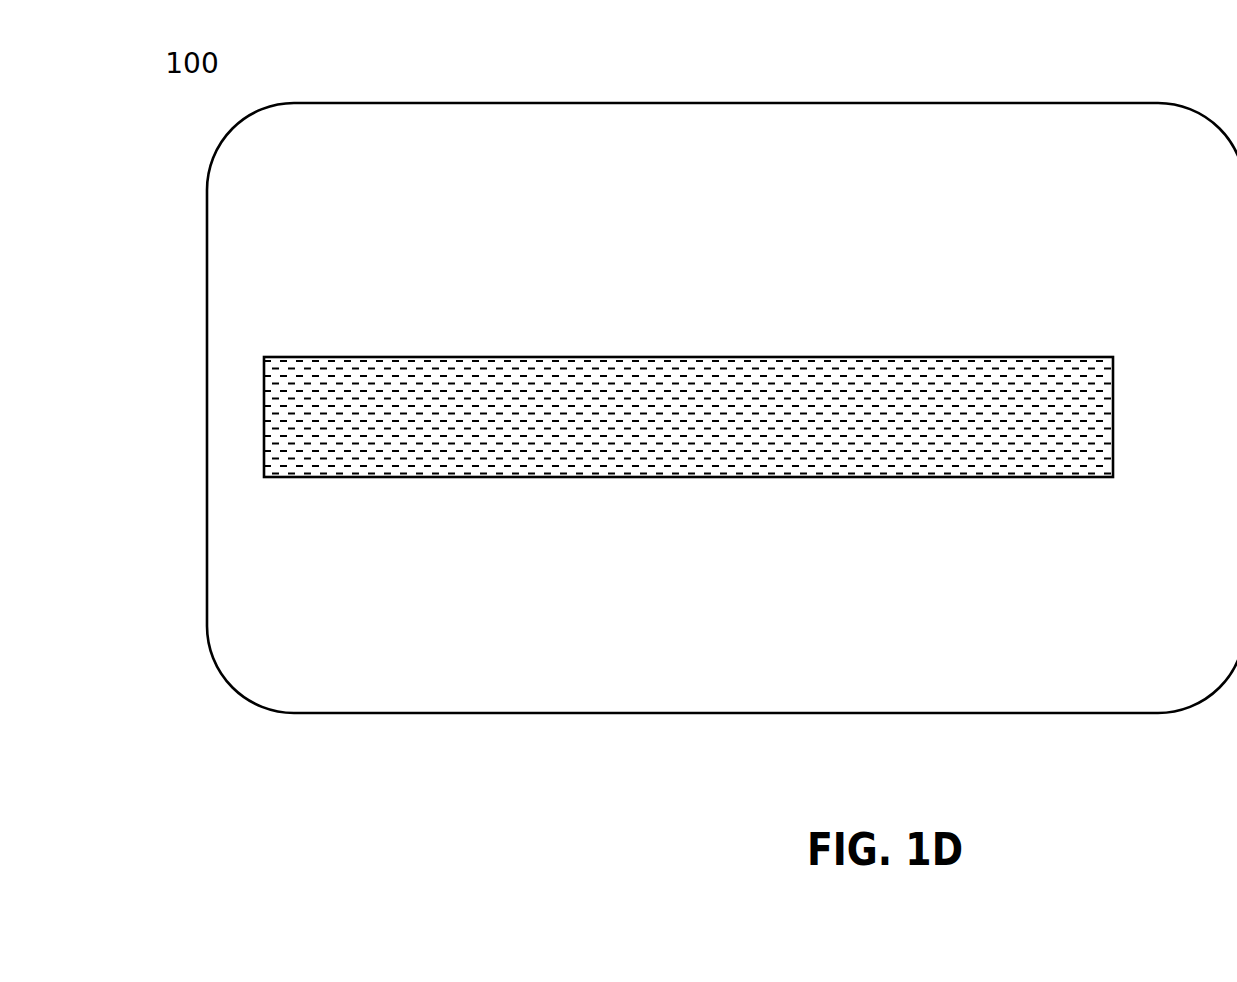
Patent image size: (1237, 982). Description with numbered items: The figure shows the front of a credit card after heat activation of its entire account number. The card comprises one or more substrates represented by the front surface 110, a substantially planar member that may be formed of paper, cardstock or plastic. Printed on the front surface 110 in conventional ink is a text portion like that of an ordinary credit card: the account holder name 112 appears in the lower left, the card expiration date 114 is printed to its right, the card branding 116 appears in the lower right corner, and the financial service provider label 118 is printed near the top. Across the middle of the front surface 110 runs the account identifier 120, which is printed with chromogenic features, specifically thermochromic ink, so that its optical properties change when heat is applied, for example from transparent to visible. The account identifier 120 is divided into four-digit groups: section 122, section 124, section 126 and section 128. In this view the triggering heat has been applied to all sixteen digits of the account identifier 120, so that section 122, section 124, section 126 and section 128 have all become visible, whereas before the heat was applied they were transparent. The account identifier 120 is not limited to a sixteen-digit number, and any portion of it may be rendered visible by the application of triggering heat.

The front surface 110 is at (643, 715).
The account holder name 112 is at (338, 615).
The card expiration date 114 is at (727, 620).
The card branding 116 is at (997, 620).
The financial service provider label 118 is at (458, 188).
The account identifier 120 is at (1117, 413).
The section 122 is at (1018, 372).
The section 124 is at (798, 372).
The section 126 is at (570, 372).
The section 128 is at (350, 372).